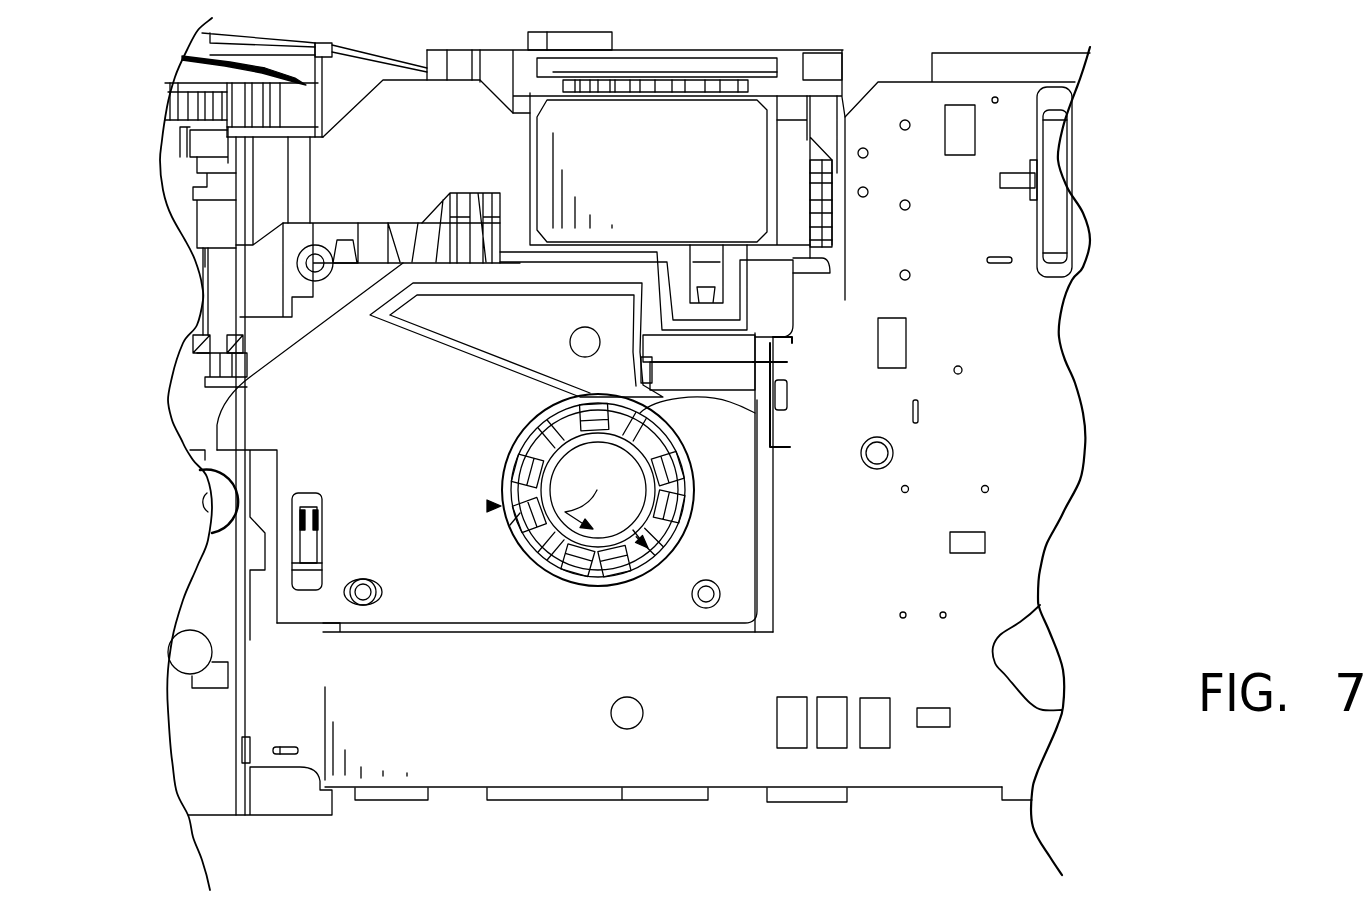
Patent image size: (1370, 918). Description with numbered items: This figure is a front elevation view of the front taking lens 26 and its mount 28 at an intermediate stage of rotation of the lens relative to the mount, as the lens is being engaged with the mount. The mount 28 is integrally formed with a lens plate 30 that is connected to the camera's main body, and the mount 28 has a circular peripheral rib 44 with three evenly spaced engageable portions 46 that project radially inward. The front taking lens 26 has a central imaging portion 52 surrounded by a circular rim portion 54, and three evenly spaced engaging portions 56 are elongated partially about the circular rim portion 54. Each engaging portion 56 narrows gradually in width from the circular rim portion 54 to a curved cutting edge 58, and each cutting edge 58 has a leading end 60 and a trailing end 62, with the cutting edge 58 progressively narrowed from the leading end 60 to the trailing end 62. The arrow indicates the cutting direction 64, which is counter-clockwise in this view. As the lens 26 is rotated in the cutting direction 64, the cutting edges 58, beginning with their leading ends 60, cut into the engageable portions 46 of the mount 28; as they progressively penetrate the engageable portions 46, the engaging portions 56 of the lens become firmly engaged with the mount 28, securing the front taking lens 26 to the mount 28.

The front taking lens 26 is at (638, 560).
The mount 28 is at (488, 507).
The lens plate 30 is at (230, 428).
The circular peripheral rib 44 is at (510, 525).
The engageable portions 46 is at (520, 440).
The central imaging portion 52 is at (757, 398).
The circular rim portion 54 is at (603, 428).
The engaging portions 56 is at (543, 407).
The cutting edges 58 is at (543, 413).
The leading end 60 is at (517, 473).
The trailing end 62 is at (562, 400).
The cutting direction 64 is at (598, 490).